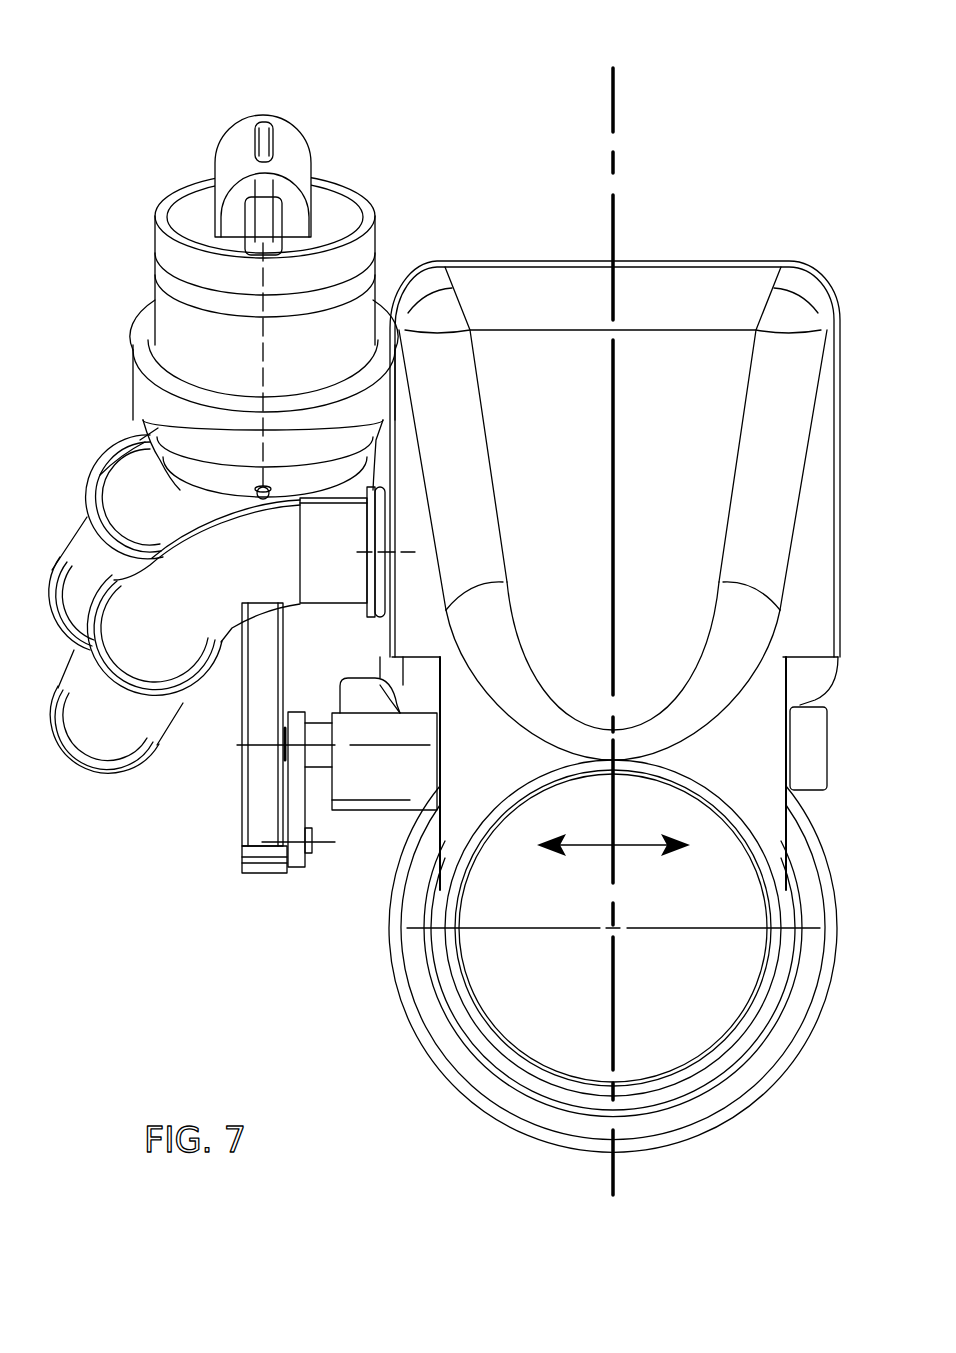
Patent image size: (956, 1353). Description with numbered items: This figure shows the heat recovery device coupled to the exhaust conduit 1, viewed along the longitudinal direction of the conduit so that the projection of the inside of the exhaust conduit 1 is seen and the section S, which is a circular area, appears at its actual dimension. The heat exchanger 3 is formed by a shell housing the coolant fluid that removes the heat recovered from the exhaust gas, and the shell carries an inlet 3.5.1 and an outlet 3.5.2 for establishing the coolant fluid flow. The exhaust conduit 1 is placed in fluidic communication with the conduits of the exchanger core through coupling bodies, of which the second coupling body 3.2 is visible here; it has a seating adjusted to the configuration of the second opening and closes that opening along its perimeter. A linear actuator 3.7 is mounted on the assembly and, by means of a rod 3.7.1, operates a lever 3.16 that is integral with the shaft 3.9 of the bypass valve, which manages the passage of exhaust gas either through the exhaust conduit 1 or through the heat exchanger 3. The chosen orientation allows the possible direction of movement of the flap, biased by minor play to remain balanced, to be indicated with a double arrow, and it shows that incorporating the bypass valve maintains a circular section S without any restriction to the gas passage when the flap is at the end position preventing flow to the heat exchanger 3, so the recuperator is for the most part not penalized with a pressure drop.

The heat exchanger 3 is at (439, 616).
The second coupling body 3.2 is at (670, 355).
The linear actuator 3.7 is at (200, 247).
The inlet 3.5.1 is at (123, 503).
The outlet 3.5.2 is at (97, 705).
The rod 3.7.1 is at (240, 722).
The shaft 3.9 is at (318, 753).
The lever 3.16 is at (297, 857).
The exhaust conduit 1 is at (492, 1032).
The section S is at (578, 1043).